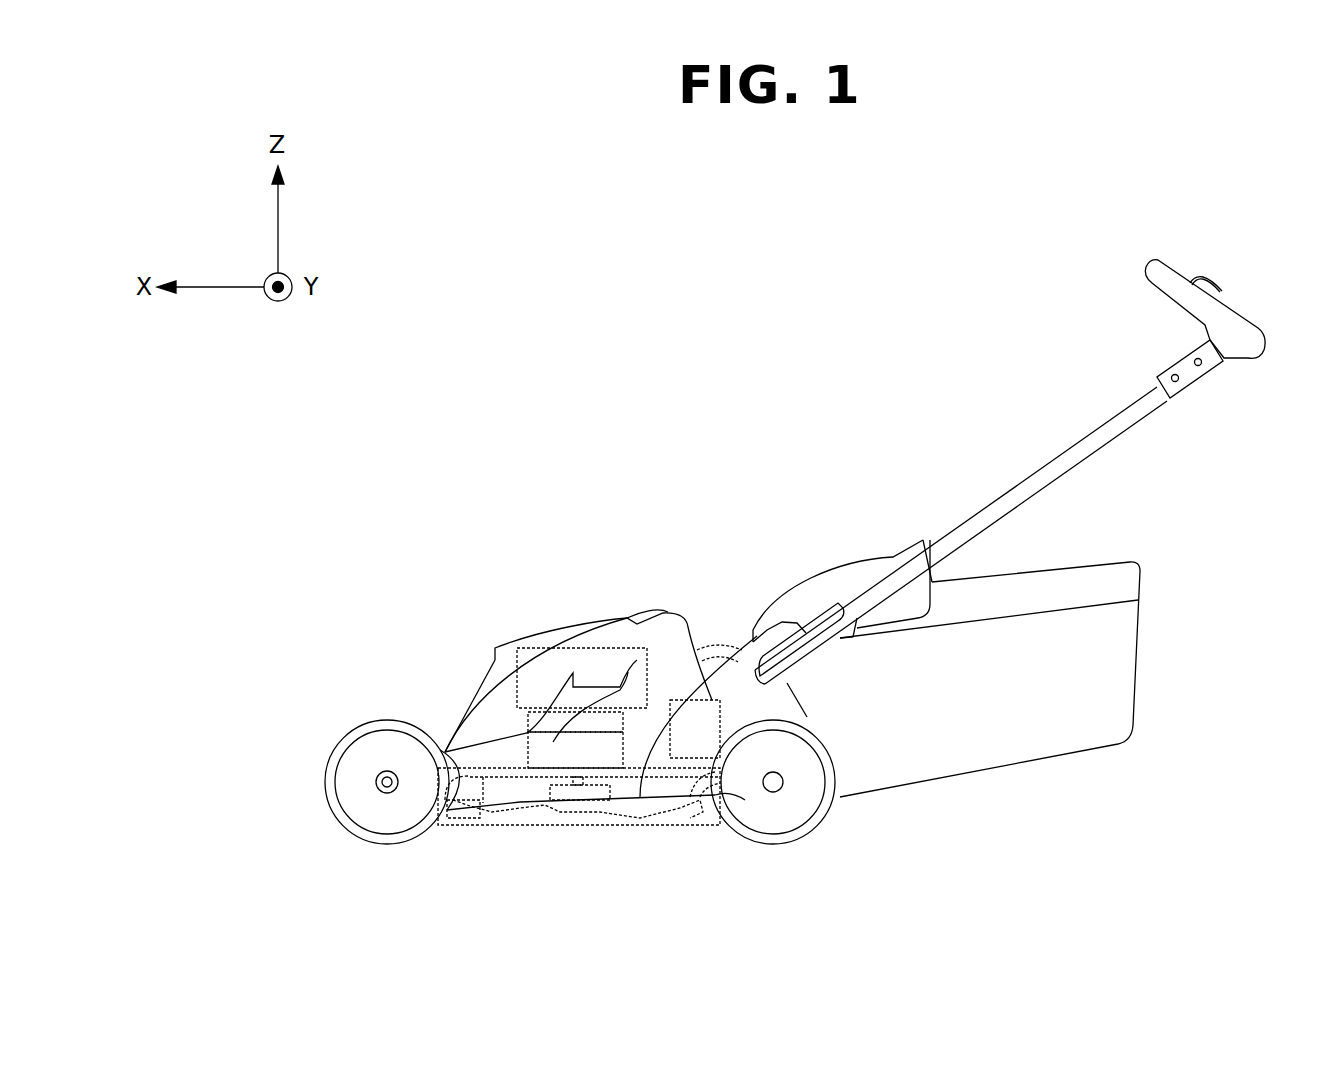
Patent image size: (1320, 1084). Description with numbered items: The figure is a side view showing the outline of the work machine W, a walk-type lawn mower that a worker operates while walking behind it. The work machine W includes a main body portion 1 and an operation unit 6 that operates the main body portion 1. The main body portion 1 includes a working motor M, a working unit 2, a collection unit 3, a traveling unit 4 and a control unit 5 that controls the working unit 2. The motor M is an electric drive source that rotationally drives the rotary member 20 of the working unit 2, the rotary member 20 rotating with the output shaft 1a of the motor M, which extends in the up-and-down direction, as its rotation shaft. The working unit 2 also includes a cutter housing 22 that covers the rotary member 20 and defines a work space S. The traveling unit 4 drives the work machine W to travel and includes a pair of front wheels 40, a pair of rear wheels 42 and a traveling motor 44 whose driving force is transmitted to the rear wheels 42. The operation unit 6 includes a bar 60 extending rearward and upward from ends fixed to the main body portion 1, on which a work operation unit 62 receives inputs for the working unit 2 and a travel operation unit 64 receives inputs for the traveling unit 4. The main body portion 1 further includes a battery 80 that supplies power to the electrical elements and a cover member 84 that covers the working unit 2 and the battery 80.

The main body portion 1 is at (667, 570).
The output shaft 1a is at (584, 779).
The working unit 2 is at (612, 862).
The collection unit 3 is at (1140, 648).
The traveling unit 4 is at (803, 870).
The control unit 5 is at (528, 734).
The operation unit 6 is at (1169, 232).
The rotary member 20 is at (523, 818).
The cutter housing 22 is at (474, 822).
The front wheels 40 is at (345, 830).
The rear wheels 42 is at (822, 823).
The traveling motor 44 is at (706, 699).
The bar 60 is at (1030, 472).
The work operation unit 62 is at (1216, 274).
The travel operation unit 64 is at (1206, 285).
The battery 80 is at (522, 646).
The cover member 84 is at (448, 727).
The working motor M is at (527, 753).
The work space S is at (568, 818).
The work machine W is at (422, 445).